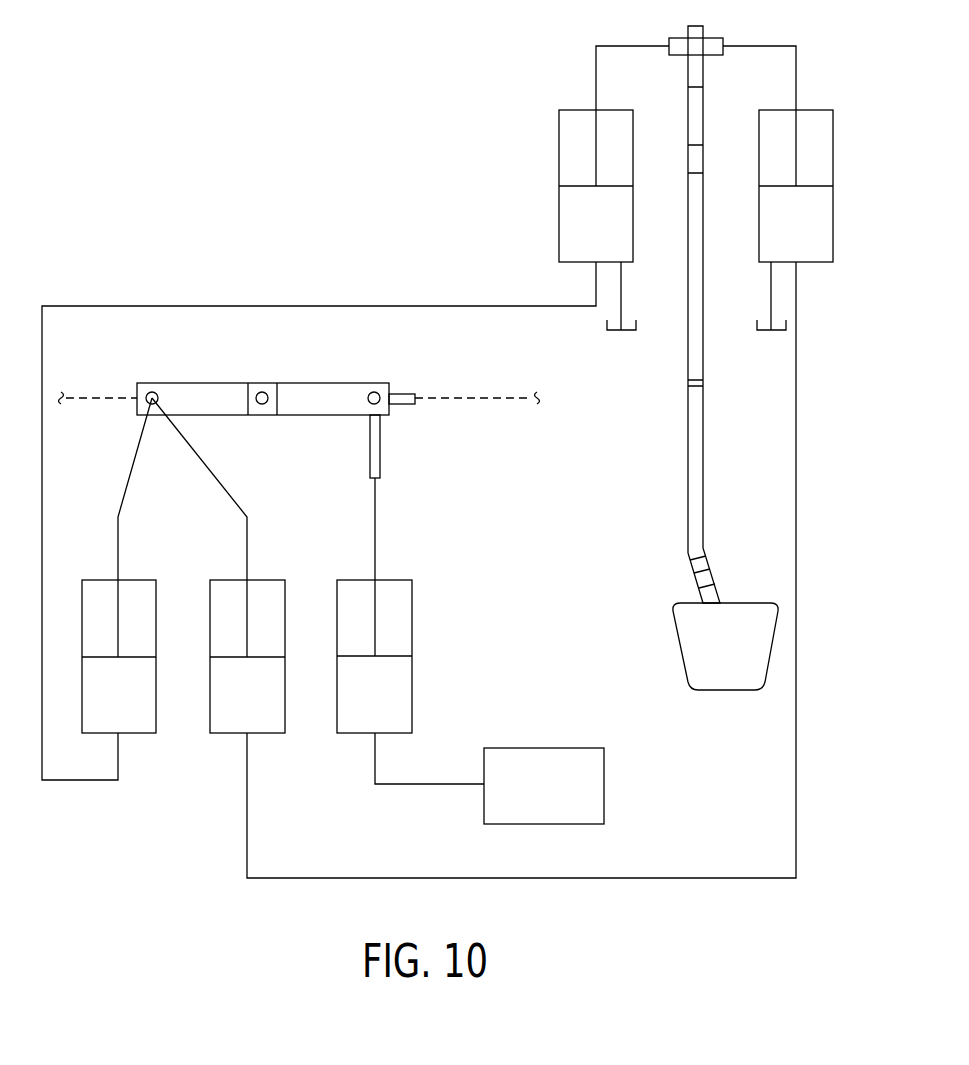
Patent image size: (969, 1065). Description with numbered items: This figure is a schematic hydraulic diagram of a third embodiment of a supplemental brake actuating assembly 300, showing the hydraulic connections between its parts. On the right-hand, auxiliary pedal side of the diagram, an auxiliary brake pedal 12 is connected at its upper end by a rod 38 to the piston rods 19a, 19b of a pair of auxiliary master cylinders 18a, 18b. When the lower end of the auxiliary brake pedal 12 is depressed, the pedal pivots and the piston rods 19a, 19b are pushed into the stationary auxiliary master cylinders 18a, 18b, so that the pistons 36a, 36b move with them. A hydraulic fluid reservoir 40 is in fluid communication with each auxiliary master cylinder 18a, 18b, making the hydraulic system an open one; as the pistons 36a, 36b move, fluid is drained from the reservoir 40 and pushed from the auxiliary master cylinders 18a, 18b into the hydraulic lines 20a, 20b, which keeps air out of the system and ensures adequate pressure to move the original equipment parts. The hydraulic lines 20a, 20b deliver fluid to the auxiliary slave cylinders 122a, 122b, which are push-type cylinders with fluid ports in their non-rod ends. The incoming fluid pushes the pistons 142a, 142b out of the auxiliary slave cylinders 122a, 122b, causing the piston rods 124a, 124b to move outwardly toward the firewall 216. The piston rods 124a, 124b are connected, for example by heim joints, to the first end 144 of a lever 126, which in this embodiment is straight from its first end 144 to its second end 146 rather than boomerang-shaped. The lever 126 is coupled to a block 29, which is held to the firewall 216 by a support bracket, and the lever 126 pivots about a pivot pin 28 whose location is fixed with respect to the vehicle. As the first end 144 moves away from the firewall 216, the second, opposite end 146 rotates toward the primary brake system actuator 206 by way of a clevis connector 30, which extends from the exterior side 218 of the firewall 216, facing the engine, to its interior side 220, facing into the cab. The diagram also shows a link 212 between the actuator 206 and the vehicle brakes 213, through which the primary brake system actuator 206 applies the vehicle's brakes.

The supplemental brake actuating assembly 300 is at (343, 150).
The auxiliary brake pedal 12 is at (695, 500).
The rod 38 is at (713, 35).
The piston rod 19a is at (796, 80).
The piston rod 19b is at (596, 73).
The auxiliary master cylinder 18a is at (759, 145).
The auxiliary master cylinder 18b is at (559, 147).
The piston 36a is at (778, 186).
The piston 36b is at (577, 186).
The hydraulic fluid reservoir 40 is at (615, 333).
The hydraulic line 20a is at (602, 878).
The hydraulic line 20b is at (363, 306).
The lever 126 is at (205, 383).
The first end 144 is at (132, 388).
The second end 146 is at (395, 388).
The pivot pin 28 is at (265, 392).
The block 29 is at (258, 412).
The exterior side 218 is at (447, 395).
The firewall 216 is at (490, 397).
The interior side 220 is at (510, 402).
The clevis connector 30 is at (380, 432).
The connecting rod 212 is at (375, 530).
The primary brake system actuator 206 is at (412, 700).
The vehicle brakes 213 is at (604, 792).
The piston rod 124a is at (247, 550).
The piston rod 124b is at (118, 550).
The piston 142a is at (230, 657).
The piston 142b is at (102, 657).
The auxiliary slave cylinder 122a is at (272, 733).
The auxiliary slave cylinder 122b is at (140, 733).